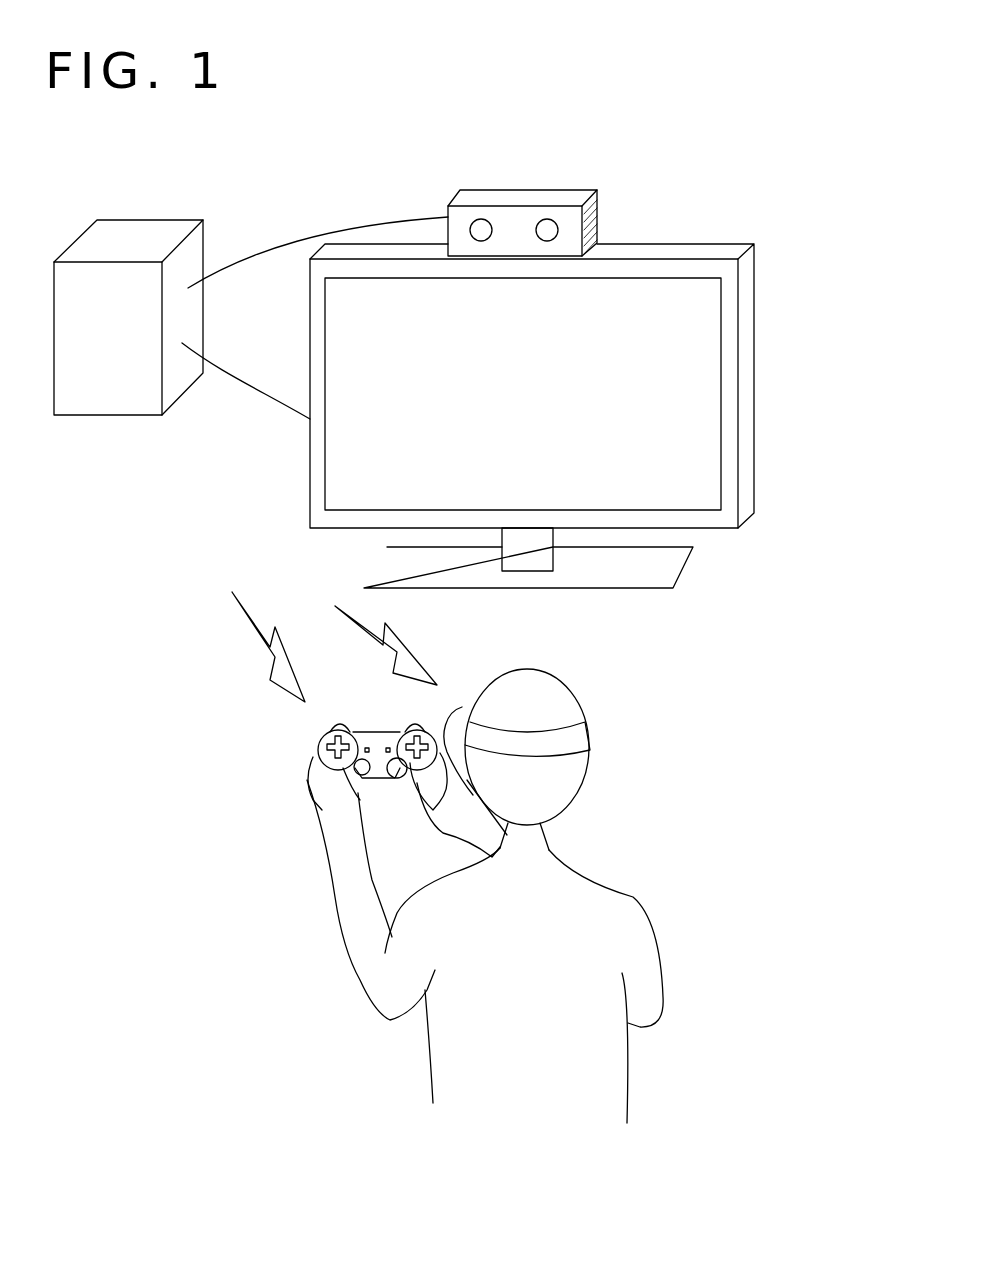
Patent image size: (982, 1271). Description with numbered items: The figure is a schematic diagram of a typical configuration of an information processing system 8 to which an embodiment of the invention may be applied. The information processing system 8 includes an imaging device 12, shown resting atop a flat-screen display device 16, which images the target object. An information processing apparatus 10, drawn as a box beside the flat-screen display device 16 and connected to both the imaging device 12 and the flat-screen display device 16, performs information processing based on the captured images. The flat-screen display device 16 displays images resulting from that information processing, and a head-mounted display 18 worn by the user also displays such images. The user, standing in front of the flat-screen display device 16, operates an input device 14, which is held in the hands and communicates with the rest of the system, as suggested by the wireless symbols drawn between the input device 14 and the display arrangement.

The information processing system 8 is at (892, 510).
The information processing apparatus 10 is at (155, 220).
The imaging device 12 is at (528, 190).
The input device 14 is at (312, 750).
The flat-screen display device 16 is at (670, 244).
The head-mounted display 18 is at (590, 725).